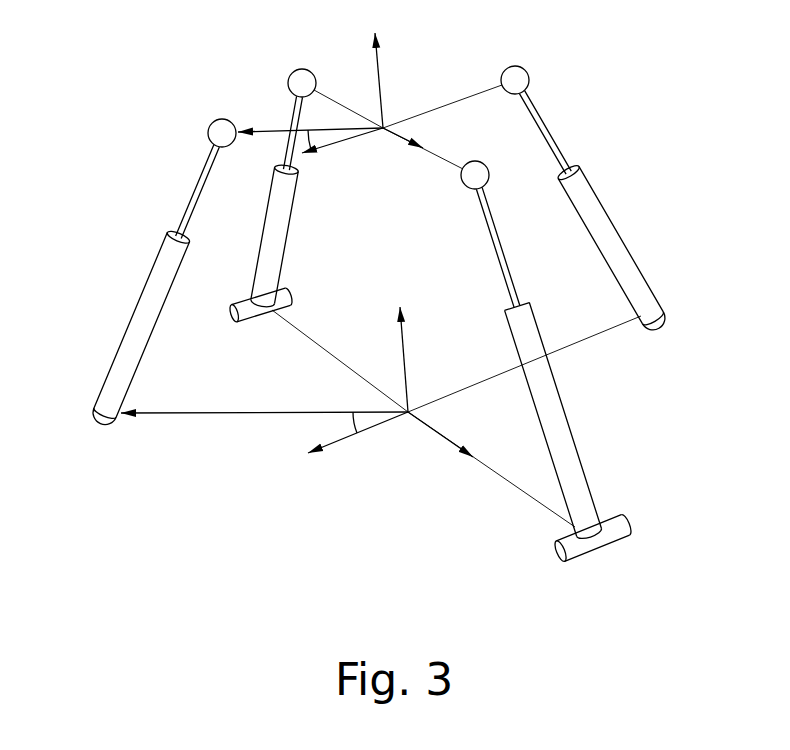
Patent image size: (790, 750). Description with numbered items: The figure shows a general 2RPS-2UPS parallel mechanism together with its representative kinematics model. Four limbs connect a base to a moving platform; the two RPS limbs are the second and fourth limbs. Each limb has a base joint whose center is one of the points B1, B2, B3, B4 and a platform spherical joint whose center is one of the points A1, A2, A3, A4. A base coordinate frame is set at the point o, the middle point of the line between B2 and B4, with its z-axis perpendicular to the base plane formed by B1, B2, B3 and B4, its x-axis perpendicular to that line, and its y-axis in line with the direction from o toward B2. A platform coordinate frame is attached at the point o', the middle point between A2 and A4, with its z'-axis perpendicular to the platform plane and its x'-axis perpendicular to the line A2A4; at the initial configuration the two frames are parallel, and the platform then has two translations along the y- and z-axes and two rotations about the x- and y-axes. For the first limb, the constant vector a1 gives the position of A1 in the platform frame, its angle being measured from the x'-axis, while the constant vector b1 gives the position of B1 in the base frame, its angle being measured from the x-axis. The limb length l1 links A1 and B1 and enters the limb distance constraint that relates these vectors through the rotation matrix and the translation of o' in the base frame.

The platform spherical joint center of limb 1 A1 is at (201, 124).
The platform spherical joint center of limb 2 A2 is at (532, 351).
The platform spherical joint center of limb 3 A3 is at (582, 181).
The platform spherical joint center of limb 4 A4 is at (282, 170).
The base joint center of limb 1 B1 is at (84, 416).
The base joint center of limb 2 B2 is at (614, 538).
The base joint center of limb 3 B3 is at (673, 307).
The base joint center of limb 4 B4 is at (245, 307).
The length of limb 1 l1 is at (161, 279).
The position vector of platform joint center A1 a1 is at (310, 107).
The position vector of base joint center B1 b1 is at (264, 391).
The base coordinate frame origin o is at (456, 414).
The platform coordinate frame origin o' is at (402, 113).